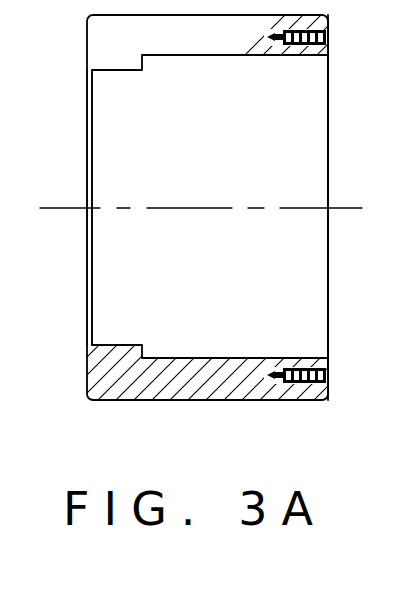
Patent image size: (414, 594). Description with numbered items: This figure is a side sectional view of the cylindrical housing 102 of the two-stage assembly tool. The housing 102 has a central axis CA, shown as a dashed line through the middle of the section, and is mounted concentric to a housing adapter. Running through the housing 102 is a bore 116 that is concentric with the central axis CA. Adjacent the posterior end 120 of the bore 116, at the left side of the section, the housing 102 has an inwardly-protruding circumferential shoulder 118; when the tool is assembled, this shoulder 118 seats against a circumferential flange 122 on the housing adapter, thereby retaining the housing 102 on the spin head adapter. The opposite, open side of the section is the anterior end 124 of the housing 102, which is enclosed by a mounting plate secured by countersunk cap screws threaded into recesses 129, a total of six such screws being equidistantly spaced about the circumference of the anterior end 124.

The cylindrical housing 102 is at (115, 413).
The bore 116 is at (272, 271).
The inwardly-protruding circumferential shoulder 118 is at (117, 336).
The posterior end 120 is at (58, 353).
The anterior end 124 is at (350, 146).
The recess 129 is at (328, 37).
The central axis CA is at (64, 208).
The circumferential flange 122 is at (413, 297).